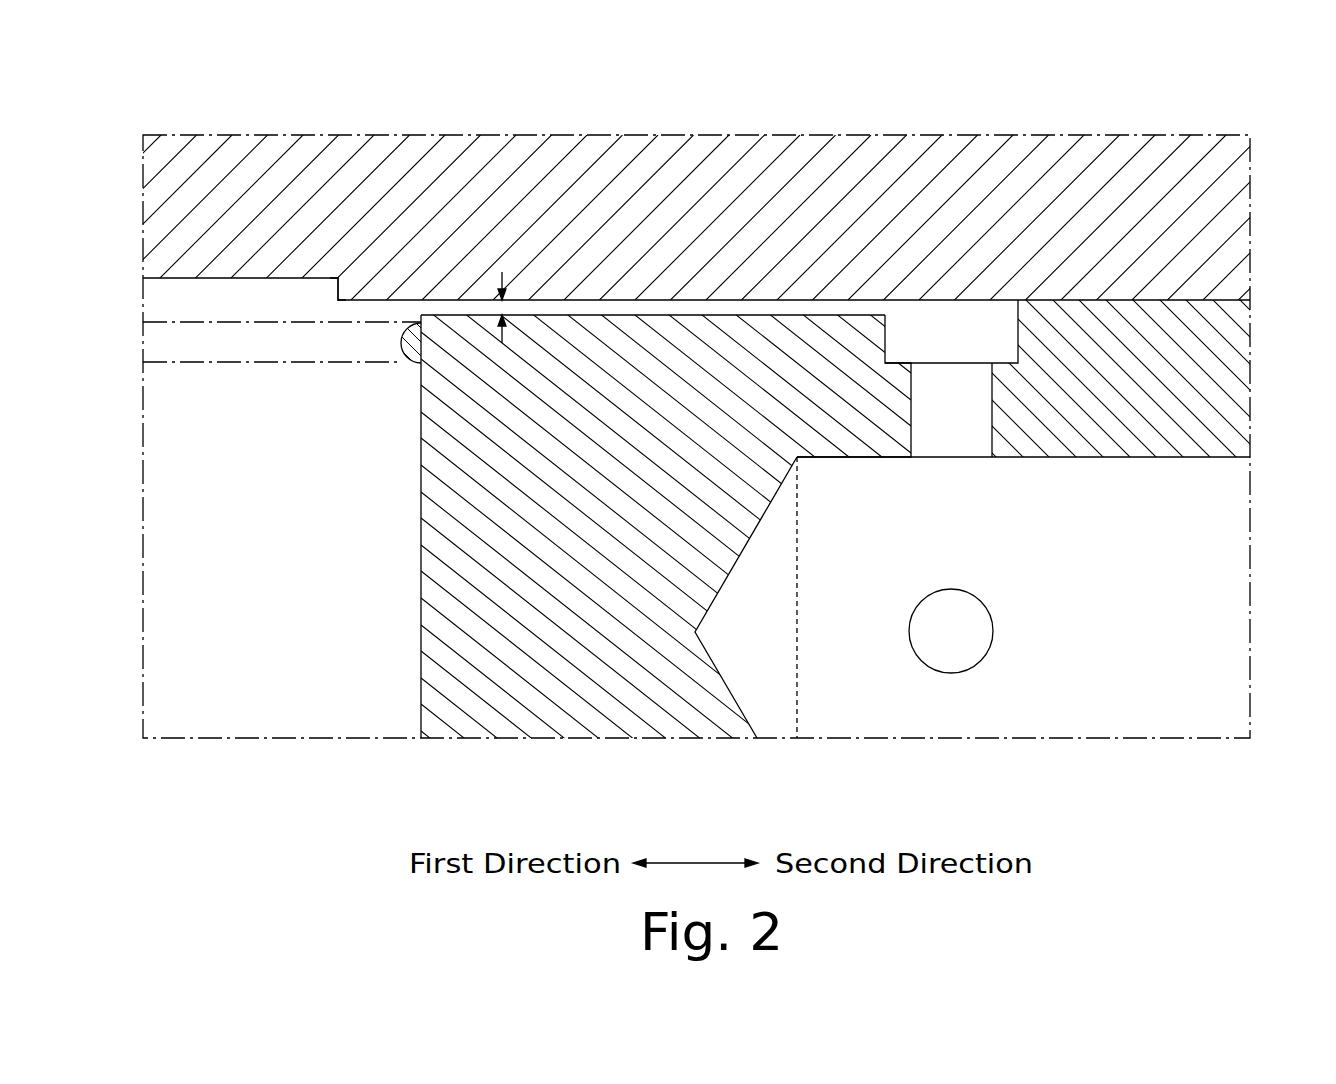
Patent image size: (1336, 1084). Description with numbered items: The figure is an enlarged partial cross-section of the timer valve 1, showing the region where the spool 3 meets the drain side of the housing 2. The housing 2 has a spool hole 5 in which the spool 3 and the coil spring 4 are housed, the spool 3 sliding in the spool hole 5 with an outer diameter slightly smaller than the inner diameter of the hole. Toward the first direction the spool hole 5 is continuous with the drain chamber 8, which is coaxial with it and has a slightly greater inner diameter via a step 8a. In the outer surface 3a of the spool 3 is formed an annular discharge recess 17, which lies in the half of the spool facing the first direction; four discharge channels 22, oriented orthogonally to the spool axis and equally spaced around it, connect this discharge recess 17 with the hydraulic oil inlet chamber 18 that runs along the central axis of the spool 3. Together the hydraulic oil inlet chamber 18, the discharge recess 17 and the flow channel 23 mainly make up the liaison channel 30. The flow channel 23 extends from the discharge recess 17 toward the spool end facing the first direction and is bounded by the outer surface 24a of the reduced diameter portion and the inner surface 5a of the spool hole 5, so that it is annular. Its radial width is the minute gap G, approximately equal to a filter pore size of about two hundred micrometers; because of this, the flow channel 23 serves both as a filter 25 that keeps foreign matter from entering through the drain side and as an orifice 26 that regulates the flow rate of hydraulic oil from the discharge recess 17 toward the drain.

The timer valve 1 is at (1205, 124).
The housing 2 is at (867, 150).
The spool 3 is at (510, 718).
The outer surface 3a is at (1120, 298).
The coil spring 4 is at (253, 320).
The spool hole 5 is at (790, 313).
The inner surface 5a is at (717, 313).
The drain chamber 8 is at (213, 280).
The step 8a is at (336, 298).
The discharge recess 17 is at (1000, 318).
The hydraulic oil inlet chamber 18 is at (1108, 458).
The discharge channel 22 is at (985, 608).
The flow channel 23 is at (700, 551).
The outer surface of the reduced diameter portion 24a is at (578, 315).
The filter 25 is at (746, 597).
The orifice 26 is at (746, 597).
The liaison channel 30 is at (1171, 472).
The minute gap G is at (500, 300).